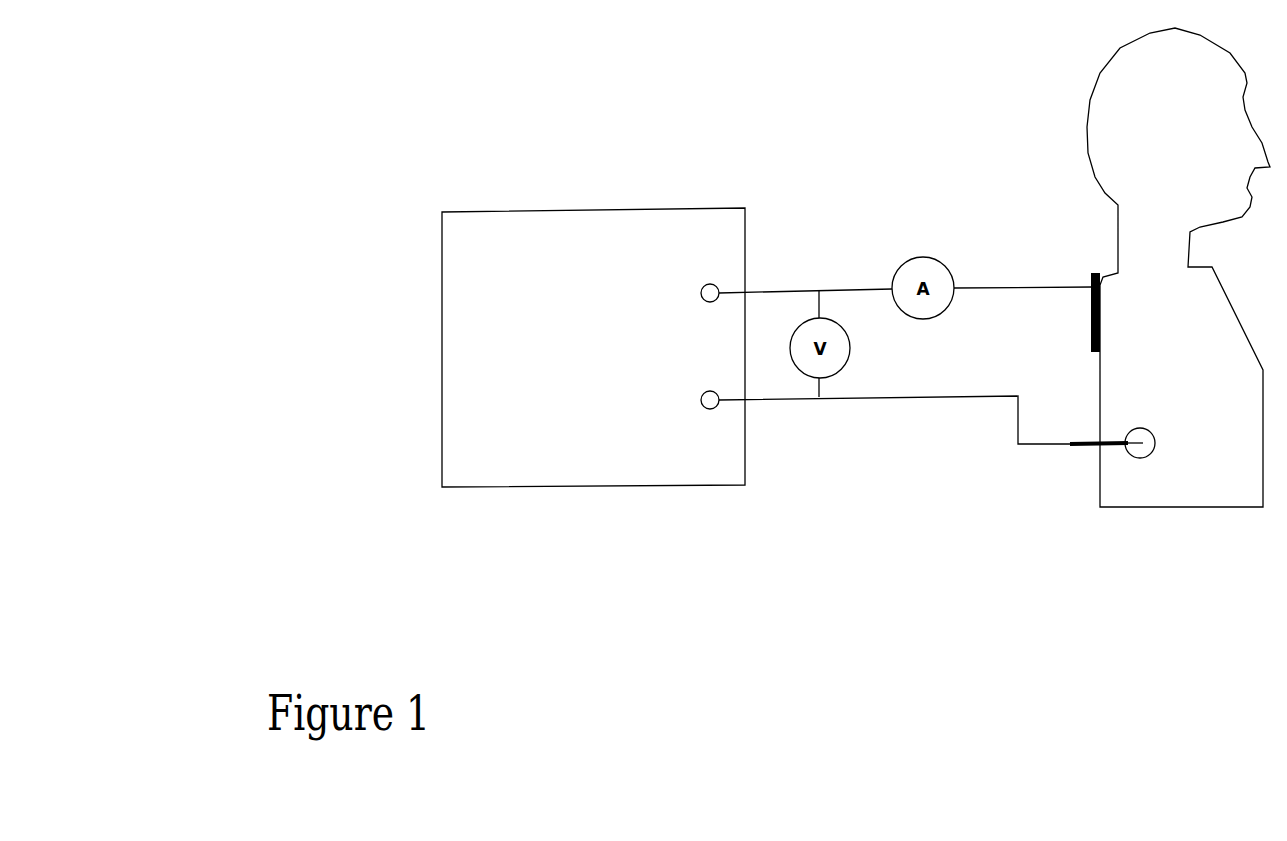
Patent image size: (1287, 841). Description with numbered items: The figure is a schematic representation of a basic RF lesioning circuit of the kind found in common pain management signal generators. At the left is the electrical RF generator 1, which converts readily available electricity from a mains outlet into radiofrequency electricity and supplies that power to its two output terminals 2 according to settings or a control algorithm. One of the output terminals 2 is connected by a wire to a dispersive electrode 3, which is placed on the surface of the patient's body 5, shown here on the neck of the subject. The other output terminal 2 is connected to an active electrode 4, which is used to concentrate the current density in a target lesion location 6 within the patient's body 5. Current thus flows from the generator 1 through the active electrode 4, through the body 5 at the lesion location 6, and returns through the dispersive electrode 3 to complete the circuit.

The electrical RF generator 1 is at (478, 211).
The output terminals 2 is at (698, 306).
The dispersive electrode 3 is at (1088, 271).
The active electrode 4 is at (1089, 457).
The patient's body 5 is at (1178, 267).
The target lesion location 6 is at (1143, 460).